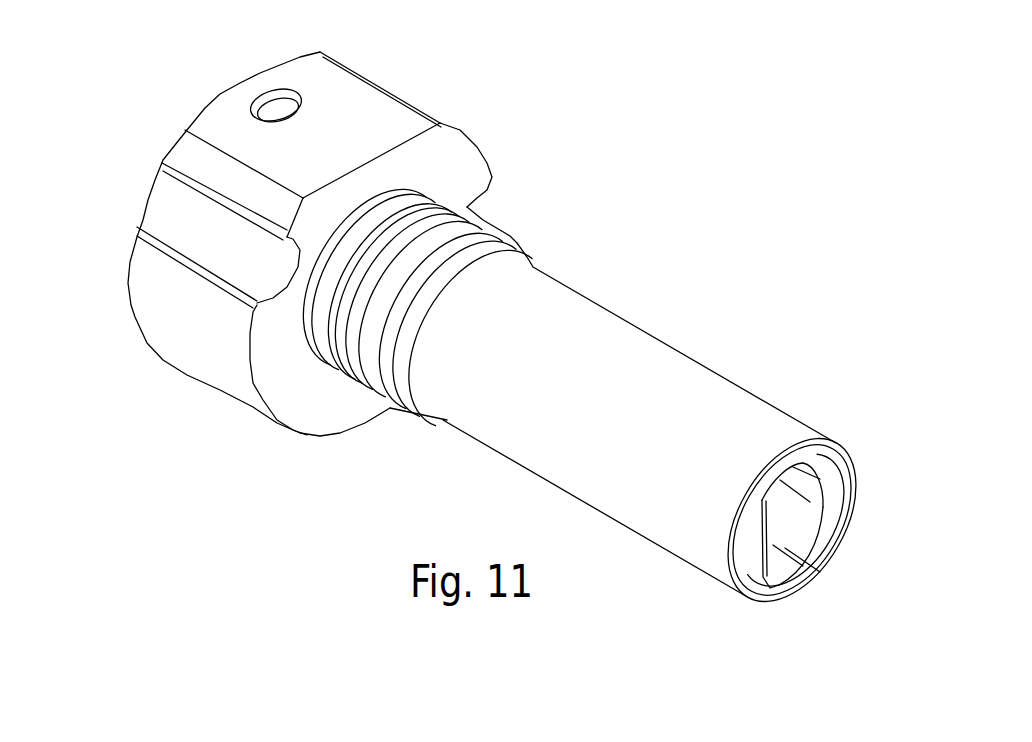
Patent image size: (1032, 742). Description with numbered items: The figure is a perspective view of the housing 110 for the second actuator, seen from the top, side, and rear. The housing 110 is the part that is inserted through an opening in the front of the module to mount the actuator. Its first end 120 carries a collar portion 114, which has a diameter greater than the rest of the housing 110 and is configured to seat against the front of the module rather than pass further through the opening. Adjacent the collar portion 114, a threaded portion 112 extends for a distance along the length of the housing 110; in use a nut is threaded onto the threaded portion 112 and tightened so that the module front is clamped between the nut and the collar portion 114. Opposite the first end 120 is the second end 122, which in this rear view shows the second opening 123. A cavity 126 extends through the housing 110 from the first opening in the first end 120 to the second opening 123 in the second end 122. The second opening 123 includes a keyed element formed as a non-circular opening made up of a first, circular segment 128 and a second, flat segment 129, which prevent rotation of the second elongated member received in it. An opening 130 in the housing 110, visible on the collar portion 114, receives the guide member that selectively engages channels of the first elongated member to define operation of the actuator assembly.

The housing 110 is at (715, 196).
The threaded portion 112 is at (505, 224).
The collar portion 114 is at (398, 115).
The first end 120 is at (181, 124).
The second end 122 is at (853, 498).
The second opening 123 is at (830, 547).
The cavity 126 is at (791, 526).
The circular segment 128 is at (832, 473).
The flat segment 129 is at (763, 548).
The opening 130 is at (263, 103).